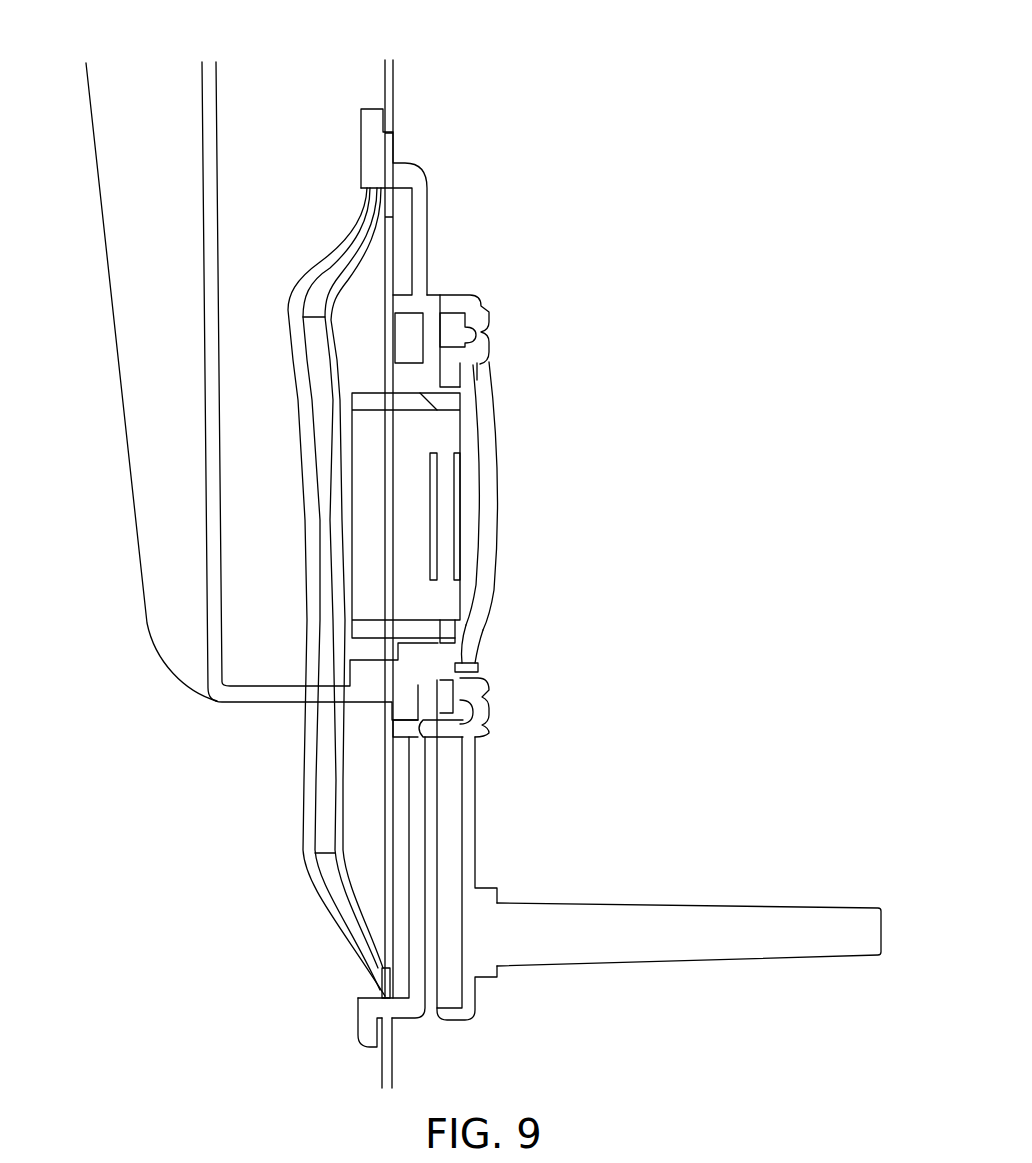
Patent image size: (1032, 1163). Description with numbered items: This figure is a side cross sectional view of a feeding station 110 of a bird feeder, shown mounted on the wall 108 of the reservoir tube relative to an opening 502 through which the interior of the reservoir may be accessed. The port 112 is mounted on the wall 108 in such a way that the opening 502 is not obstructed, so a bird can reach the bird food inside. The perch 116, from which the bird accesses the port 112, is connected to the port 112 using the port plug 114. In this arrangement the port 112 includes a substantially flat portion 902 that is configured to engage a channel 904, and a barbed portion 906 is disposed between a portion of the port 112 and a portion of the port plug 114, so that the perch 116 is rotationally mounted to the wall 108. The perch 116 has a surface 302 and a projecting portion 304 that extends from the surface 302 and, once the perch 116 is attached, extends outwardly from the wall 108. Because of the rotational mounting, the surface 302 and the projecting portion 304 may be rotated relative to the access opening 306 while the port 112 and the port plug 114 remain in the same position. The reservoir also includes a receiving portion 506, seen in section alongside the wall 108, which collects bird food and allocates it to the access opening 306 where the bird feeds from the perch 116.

The wall 108 is at (395, 103).
The feeding station 110 is at (715, 322).
The port 112 is at (427, 188).
The port plug 114 is at (488, 593).
The perch 116 is at (667, 720).
The surface 302 is at (475, 763).
The projecting portion 304 is at (583, 965).
The access opening 306 is at (503, 508).
The opening 502 is at (388, 448).
The receiving portion 506 is at (208, 625).
The flat portion 902 is at (483, 445).
The channel 904 is at (450, 390).
The barbed portion 906 is at (473, 363).